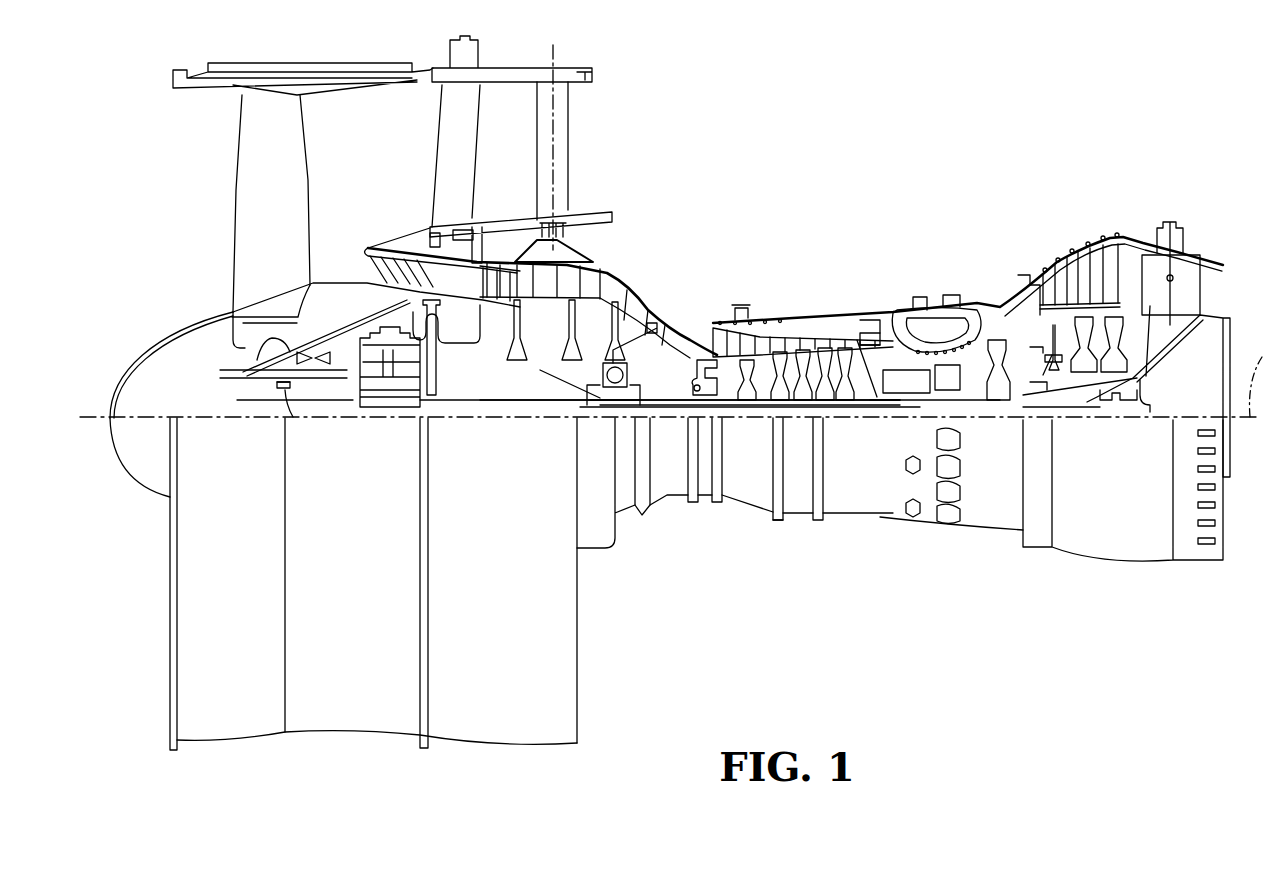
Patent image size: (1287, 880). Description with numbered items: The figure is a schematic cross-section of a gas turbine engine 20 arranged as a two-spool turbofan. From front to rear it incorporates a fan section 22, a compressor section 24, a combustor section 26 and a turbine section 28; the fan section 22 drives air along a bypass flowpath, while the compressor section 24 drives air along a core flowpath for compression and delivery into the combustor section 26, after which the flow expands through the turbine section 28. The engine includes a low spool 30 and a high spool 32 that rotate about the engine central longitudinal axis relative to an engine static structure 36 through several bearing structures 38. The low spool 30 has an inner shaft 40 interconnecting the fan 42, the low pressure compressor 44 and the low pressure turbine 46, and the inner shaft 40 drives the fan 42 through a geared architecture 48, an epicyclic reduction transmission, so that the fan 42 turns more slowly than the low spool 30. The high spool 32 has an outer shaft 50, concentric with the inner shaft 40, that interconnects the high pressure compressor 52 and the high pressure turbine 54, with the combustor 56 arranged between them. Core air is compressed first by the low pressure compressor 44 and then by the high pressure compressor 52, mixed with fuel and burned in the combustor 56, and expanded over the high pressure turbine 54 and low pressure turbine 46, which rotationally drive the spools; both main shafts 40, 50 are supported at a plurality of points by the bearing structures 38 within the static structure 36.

The gas turbine engine 20 is at (990, 132).
The fan section 22 is at (167, 46).
The compressor section 24 is at (830, 187).
The combustor section 26 is at (830, 187).
The turbine section 28 is at (943, 187).
The low spool 30 is at (650, 380).
The high spool 32 is at (853, 374).
The engine static structure 36 is at (800, 520).
The bearing structures 38 is at (205, 484).
The inner shaft 40 is at (970, 401).
The fan 42 is at (260, 225).
The low pressure compressor 44 is at (609, 282).
The low pressure turbine 46 is at (1093, 269).
The geared architecture 48 is at (387, 375).
The outer shaft 50 is at (964, 388).
The high pressure compressor 52 is at (733, 343).
The high pressure turbine 54 is at (997, 330).
The combustor 56 is at (940, 334).